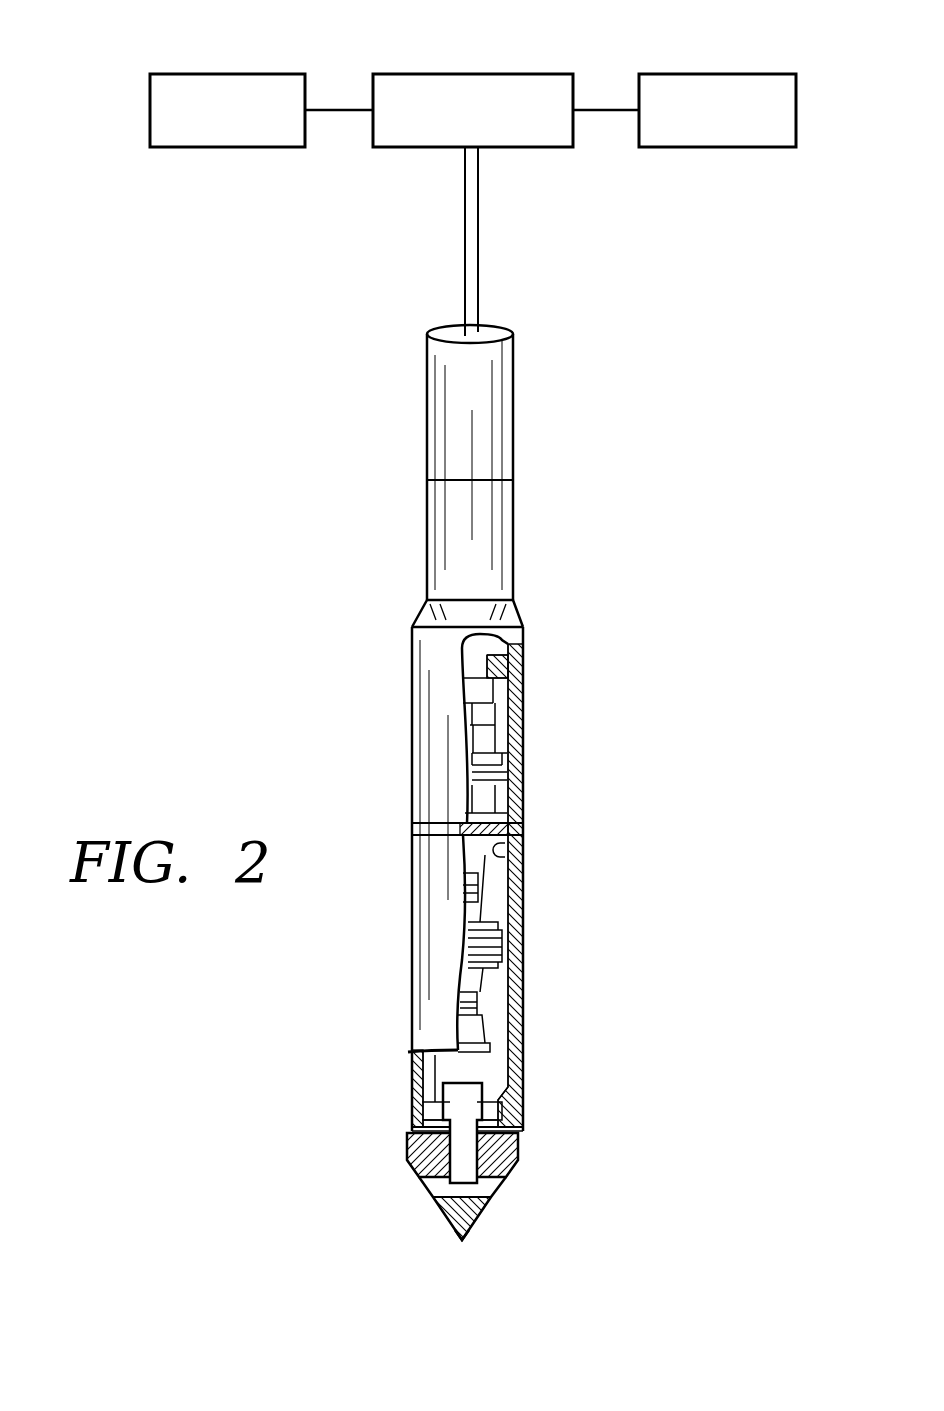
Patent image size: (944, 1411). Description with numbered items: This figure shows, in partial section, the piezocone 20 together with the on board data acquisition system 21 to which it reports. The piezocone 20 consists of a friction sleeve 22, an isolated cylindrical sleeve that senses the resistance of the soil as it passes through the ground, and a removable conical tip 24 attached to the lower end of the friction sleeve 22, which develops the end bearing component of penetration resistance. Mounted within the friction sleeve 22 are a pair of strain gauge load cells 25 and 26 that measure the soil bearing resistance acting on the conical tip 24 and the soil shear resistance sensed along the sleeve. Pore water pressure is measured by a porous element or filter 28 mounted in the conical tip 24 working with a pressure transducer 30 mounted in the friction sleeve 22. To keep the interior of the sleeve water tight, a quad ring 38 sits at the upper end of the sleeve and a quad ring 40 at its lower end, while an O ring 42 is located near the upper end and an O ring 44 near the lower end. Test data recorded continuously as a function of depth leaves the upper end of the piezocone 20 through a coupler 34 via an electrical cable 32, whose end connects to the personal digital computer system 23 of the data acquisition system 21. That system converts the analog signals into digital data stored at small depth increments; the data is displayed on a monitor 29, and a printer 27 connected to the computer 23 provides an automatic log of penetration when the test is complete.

The piezocone 20 is at (360, 664).
The on board data acquisition system 21 is at (427, 118).
The friction sleeve 22 is at (405, 1074).
The personal digital computer system 23 is at (530, 80).
The conical tip 24 is at (487, 1207).
The strain gauge load cell 25 is at (480, 885).
The strain gauge load cell 26 is at (477, 1013).
The printer 27 is at (265, 80).
The porous element or filter 28 is at (487, 1185).
The monitor 29 is at (753, 80).
The pressure transducer 30 is at (460, 1093).
The electrical cable 32 is at (470, 258).
The coupler 34 is at (482, 387).
The quad ring 38 is at (518, 830).
The quad ring 40 is at (497, 1130).
The O ring 42 is at (520, 858).
The O ring 44 is at (492, 1117).